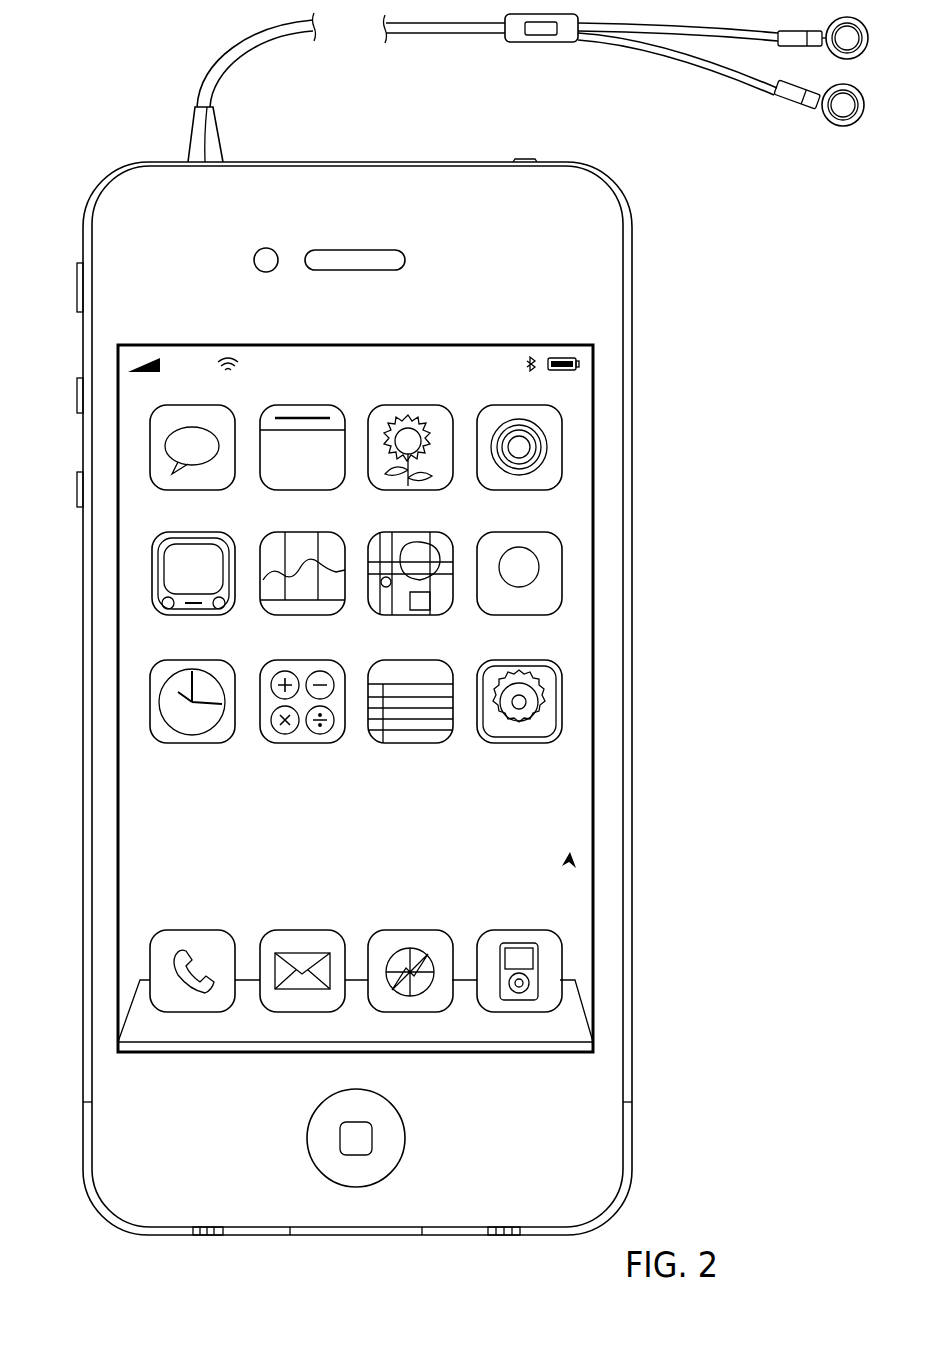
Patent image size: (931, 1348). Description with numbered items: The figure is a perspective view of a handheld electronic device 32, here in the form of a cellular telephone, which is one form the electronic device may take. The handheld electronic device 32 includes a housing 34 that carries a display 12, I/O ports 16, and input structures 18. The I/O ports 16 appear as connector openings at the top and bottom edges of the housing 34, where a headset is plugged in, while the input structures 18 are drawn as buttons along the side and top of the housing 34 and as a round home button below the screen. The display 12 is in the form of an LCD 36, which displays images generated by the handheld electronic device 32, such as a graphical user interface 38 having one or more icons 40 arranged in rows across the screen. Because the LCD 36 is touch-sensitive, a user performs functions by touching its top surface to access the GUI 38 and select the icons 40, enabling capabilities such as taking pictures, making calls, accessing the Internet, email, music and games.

The display 12 is at (379, 689).
The I/O ports 16 is at (214, 111).
The input structures 18 is at (78, 297).
The handheld electronic device 32 is at (168, 122).
The housing 34 is at (632, 340).
The LCD 36 is at (423, 698).
The graphical user interface 38 is at (572, 856).
The icons 40 is at (185, 407).